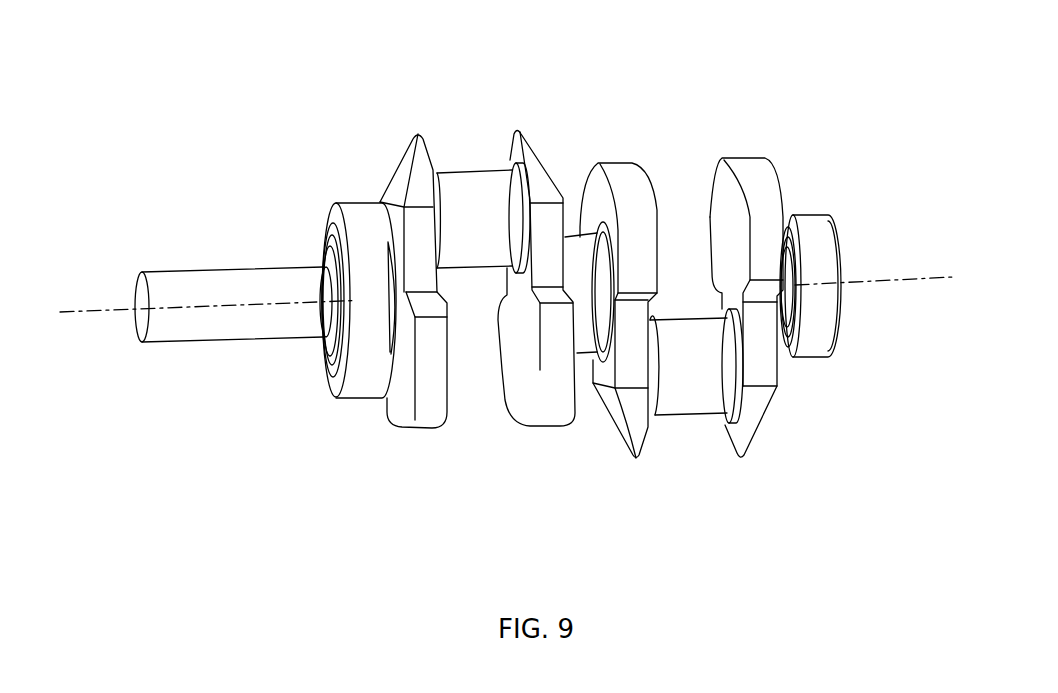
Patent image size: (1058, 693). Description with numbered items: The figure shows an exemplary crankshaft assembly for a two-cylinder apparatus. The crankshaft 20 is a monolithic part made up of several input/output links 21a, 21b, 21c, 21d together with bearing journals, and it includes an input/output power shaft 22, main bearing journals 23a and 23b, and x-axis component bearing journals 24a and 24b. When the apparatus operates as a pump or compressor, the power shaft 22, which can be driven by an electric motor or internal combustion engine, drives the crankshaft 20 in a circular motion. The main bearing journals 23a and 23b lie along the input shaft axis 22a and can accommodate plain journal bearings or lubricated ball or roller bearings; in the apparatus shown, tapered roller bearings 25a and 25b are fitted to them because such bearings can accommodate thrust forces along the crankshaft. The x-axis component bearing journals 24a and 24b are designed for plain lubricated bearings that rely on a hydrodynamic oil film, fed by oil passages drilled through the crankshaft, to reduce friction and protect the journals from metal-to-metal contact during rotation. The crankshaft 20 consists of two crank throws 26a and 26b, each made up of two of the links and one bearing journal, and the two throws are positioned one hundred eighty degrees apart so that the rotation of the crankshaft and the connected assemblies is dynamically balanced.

The crankshaft 20 is at (727, 30).
The input/output power shaft 22 is at (181, 268).
The input shaft axis 22a is at (88, 318).
The main bearing journal 23a is at (323, 247).
The main bearing journal 23b is at (783, 350).
The tapered roller bearing 25a is at (353, 400).
The tapered roller bearing 25b is at (810, 213).
The input/output link 21a is at (402, 160).
The input/output link 21b is at (522, 134).
The input/output link 21c is at (615, 160).
The input/output link 21d is at (745, 158).
The x-axis component bearing journal 24a is at (460, 170).
The x-axis component bearing journal 24b is at (670, 317).
The crank throw 26a is at (470, 296).
The crank throw 26b is at (683, 306).